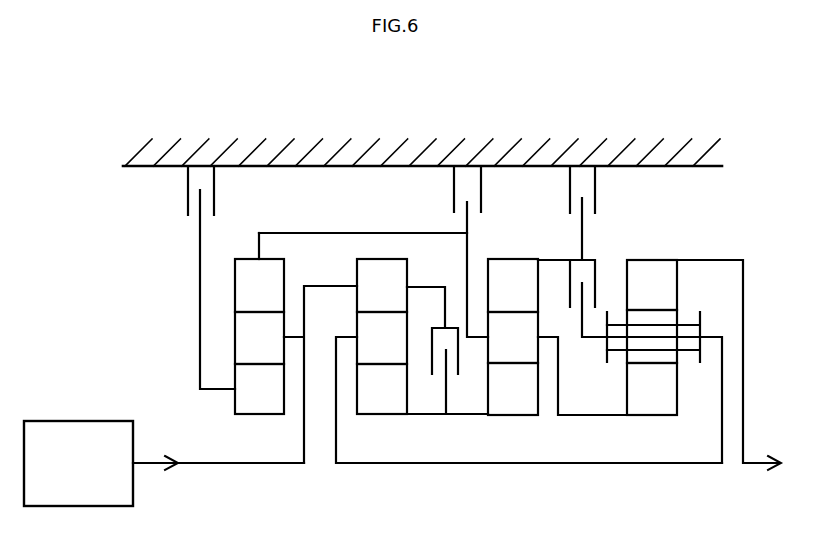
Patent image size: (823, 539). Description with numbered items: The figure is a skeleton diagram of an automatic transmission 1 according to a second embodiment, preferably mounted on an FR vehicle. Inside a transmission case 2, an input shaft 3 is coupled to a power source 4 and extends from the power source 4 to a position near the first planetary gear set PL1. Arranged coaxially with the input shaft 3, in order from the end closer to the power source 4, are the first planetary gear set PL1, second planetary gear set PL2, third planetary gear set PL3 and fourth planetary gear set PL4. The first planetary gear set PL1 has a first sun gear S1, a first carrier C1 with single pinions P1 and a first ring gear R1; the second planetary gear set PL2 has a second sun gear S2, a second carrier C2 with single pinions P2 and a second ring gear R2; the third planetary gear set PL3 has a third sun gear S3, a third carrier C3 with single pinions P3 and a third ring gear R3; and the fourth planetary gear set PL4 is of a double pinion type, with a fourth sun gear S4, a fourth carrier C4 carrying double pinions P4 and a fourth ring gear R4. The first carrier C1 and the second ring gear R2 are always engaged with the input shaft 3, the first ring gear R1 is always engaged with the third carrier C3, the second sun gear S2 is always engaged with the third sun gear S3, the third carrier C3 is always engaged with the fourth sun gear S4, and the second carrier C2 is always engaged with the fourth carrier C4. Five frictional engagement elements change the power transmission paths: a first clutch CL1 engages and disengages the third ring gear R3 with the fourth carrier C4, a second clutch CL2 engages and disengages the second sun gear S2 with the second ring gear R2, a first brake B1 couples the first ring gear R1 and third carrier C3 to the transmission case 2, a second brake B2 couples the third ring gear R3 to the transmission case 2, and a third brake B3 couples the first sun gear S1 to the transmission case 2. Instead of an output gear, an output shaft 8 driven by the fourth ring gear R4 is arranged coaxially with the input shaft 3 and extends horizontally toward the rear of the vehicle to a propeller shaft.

The automatic transmission 1 is at (338, 130).
The transmission case 2 is at (609, 153).
The input shaft 3 is at (215, 466).
The power source 4 is at (71, 420).
The output shaft 8 is at (763, 461).
The first brake B1 is at (454, 178).
The second brake B2 is at (597, 178).
The third brake B3 is at (188, 181).
The first clutch CL1 is at (598, 286).
The second clutch CL2 is at (462, 360).
The first planetary gear set PL1 is at (223, 322).
The second planetary gear set PL2 is at (417, 322).
The third planetary gear set PL3 is at (529, 322).
The fourth planetary gear set PL4 is at (670, 327).
The first ring gear R1 is at (235, 283).
The second ring gear R2 is at (407, 272).
The third ring gear R3 is at (486, 283).
The fourth ring gear R4 is at (677, 283).
The single pinions P1 is at (235, 336).
The single pinions P2 is at (407, 331).
The single pinions P3 is at (538, 329).
The double pinions P4 is at (677, 320).
The first sun gear S1 is at (259, 416).
The second sun gear S2 is at (378, 416).
The third sun gear S3 is at (504, 416).
The fourth sun gear S4 is at (650, 416).
The first carrier C1 is at (304, 335).
The second carrier C2 is at (341, 337).
The third carrier C3 is at (549, 340).
The fourth carrier C4 is at (722, 331).